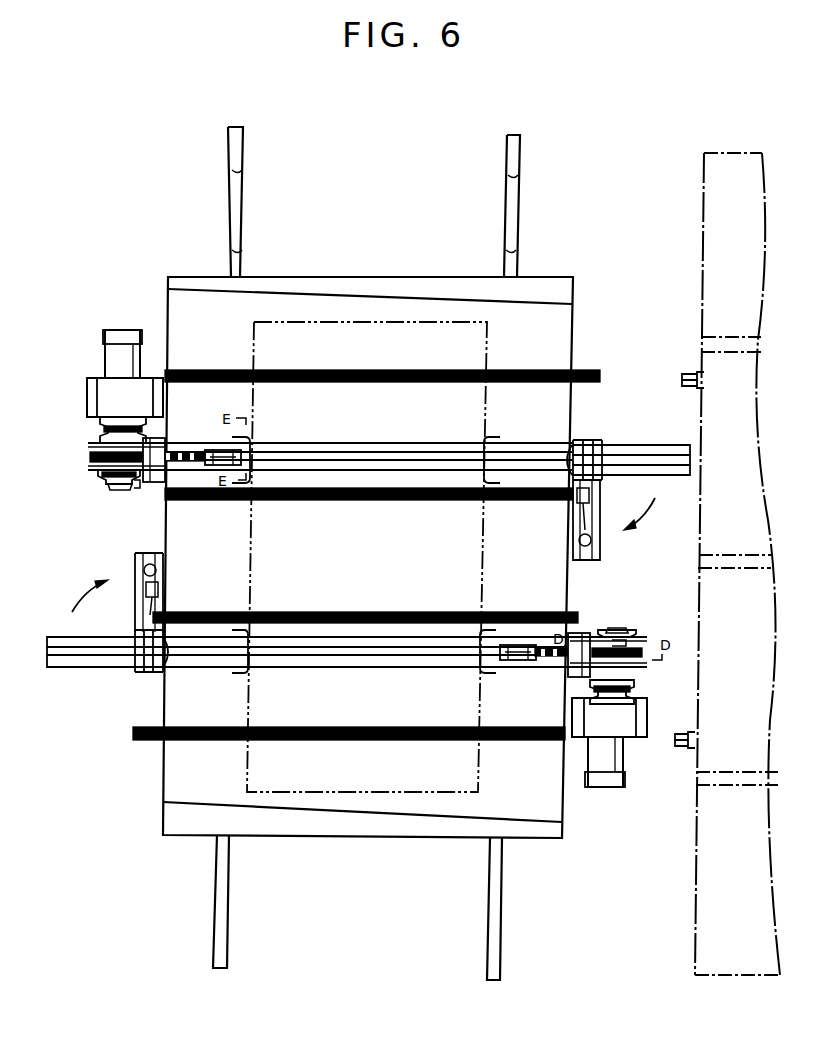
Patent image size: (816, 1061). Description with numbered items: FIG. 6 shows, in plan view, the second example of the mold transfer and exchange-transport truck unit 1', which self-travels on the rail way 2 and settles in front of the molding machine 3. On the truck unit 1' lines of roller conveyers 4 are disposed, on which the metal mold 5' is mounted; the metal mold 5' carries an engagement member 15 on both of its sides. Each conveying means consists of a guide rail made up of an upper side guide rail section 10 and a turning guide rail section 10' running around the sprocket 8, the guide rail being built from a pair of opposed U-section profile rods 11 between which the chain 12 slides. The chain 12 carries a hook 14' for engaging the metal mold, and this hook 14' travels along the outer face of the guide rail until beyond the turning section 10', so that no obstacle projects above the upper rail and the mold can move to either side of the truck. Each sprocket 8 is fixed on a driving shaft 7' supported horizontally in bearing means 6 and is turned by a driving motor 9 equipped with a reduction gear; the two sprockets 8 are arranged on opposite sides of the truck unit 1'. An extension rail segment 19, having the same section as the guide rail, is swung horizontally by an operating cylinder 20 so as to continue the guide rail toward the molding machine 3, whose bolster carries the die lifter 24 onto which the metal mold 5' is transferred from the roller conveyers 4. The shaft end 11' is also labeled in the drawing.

The mold transfer and exchange-transport truck unit 1' is at (368, 585).
The rail way 2 is at (229, 924).
The molding machine 3 is at (703, 218).
The roller conveyer 4 is at (521, 370).
The metal mold 5' is at (367, 601).
The bearing means 6 is at (100, 433).
The driving shaft 7' is at (373, 561).
The sprocket 8 is at (90, 456).
The driving motor 9 is at (112, 360).
The upper side guide rail section 10 is at (366, 562).
The turning guide rail section 10' is at (376, 563).
The profile rod 11 is at (367, 554).
The shaft end 11' is at (362, 563).
The chain 12 is at (149, 470).
The hook 14' is at (364, 577).
The engagement member 15 is at (244, 437).
The extension rail segment 19 is at (625, 445).
The operating cylinder 20 is at (600, 505).
The die lifter 24 is at (714, 555).